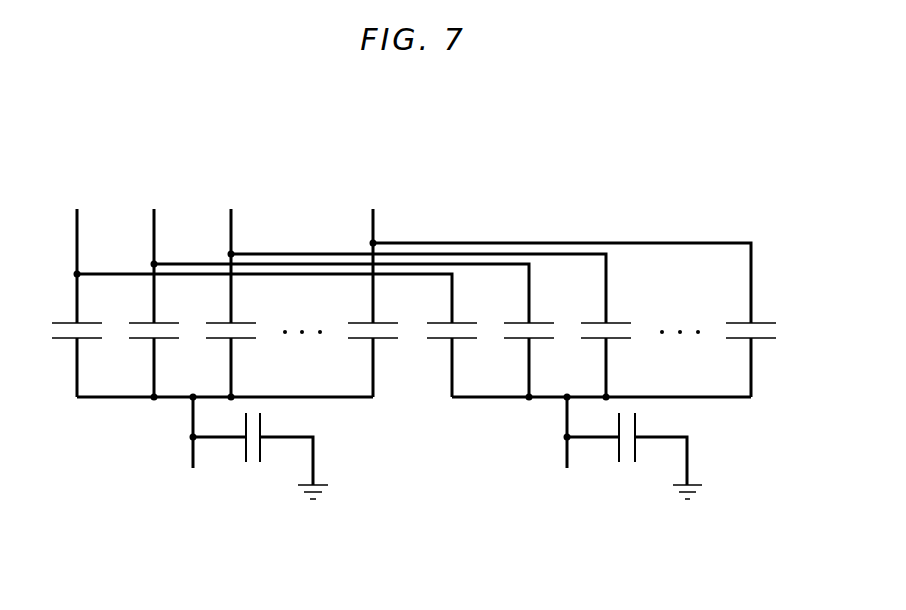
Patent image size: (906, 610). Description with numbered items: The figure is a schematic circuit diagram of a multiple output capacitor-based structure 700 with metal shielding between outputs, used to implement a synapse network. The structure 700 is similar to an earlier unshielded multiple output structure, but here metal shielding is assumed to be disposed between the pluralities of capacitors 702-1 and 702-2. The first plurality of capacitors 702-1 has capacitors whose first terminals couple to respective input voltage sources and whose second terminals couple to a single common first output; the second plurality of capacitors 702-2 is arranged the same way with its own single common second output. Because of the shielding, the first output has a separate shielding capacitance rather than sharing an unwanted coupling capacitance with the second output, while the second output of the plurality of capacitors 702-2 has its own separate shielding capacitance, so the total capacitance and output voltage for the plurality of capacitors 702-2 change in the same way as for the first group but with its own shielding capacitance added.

The multiple output capacitor-based structure 700 is at (425, 88).
The plurality of capacitors 702-1 is at (63, 167).
The plurality of capacitors 702-2 is at (438, 167).